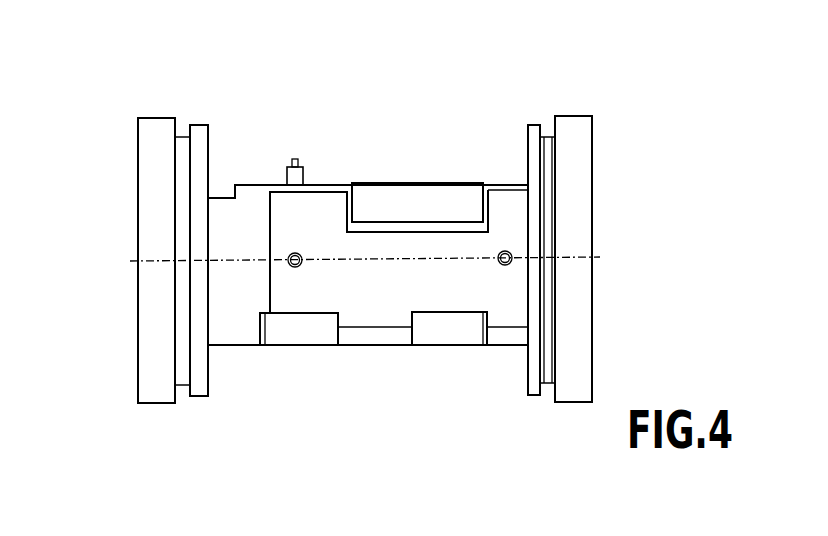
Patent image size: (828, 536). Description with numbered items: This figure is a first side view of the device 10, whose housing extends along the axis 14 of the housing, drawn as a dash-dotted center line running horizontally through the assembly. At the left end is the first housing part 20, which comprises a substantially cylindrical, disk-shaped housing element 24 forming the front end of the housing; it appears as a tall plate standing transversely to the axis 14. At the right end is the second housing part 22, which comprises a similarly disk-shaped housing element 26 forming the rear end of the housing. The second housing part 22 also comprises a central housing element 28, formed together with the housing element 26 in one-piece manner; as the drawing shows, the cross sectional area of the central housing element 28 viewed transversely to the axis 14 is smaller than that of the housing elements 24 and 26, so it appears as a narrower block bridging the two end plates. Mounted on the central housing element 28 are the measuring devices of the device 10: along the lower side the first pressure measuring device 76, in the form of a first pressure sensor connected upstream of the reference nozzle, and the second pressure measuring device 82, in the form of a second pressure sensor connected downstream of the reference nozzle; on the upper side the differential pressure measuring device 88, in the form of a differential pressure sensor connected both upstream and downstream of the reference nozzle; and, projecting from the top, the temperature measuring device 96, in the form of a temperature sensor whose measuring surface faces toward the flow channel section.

The device 10 is at (318, 74).
The axis of the housing 14 is at (579, 256).
The first housing part 20 is at (180, 418).
The second housing part 22 is at (520, 382).
The housing element 24 is at (148, 345).
The housing element 26 is at (575, 310).
The central housing element 28 is at (357, 303).
The first pressure measuring device 76 is at (310, 333).
The second pressure measuring device 82 is at (440, 335).
The differential pressure measuring device 88 is at (412, 196).
The temperature measuring device 96 is at (292, 158).